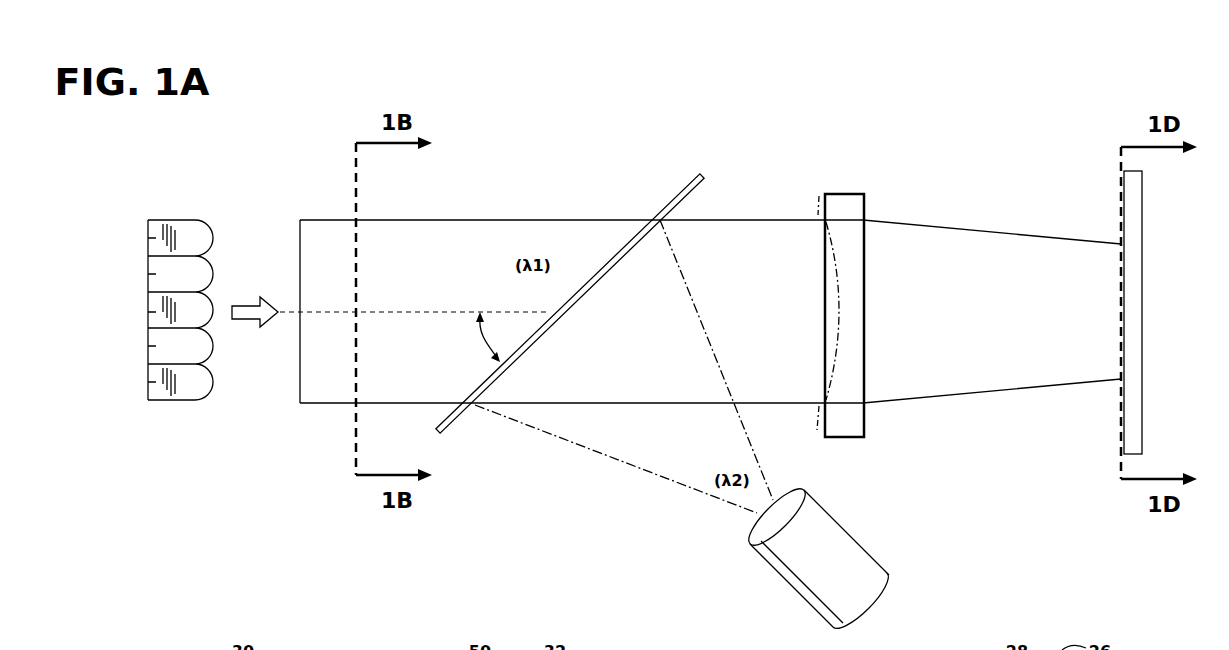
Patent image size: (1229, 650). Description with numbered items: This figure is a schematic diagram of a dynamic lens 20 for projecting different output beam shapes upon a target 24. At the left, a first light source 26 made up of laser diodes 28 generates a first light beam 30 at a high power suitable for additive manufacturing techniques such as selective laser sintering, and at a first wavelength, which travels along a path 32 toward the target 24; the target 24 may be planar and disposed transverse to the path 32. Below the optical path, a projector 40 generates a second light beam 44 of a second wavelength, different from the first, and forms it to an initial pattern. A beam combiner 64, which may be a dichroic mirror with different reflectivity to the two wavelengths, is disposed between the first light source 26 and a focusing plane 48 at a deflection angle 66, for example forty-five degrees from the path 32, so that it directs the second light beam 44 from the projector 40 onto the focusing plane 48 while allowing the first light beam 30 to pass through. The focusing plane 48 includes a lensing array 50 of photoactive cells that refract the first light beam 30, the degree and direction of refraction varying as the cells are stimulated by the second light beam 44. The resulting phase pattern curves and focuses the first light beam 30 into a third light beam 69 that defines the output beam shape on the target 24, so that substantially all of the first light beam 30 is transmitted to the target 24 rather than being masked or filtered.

The dynamic lens 20 is at (989, 125).
The target 24 is at (1132, 212).
The first light source 26 is at (170, 216).
The laser diodes 28 is at (148, 238).
The first light beam 30 is at (412, 262).
The path 32 is at (247, 305).
The projector 40 is at (830, 565).
The second light beam 44 is at (648, 437).
The focusing plane 48 is at (864, 281).
The lensing array 50 is at (847, 193).
The beam combiner 64 is at (702, 178).
The deflection angle 66 is at (480, 340).
The third light beam 69 is at (986, 304).